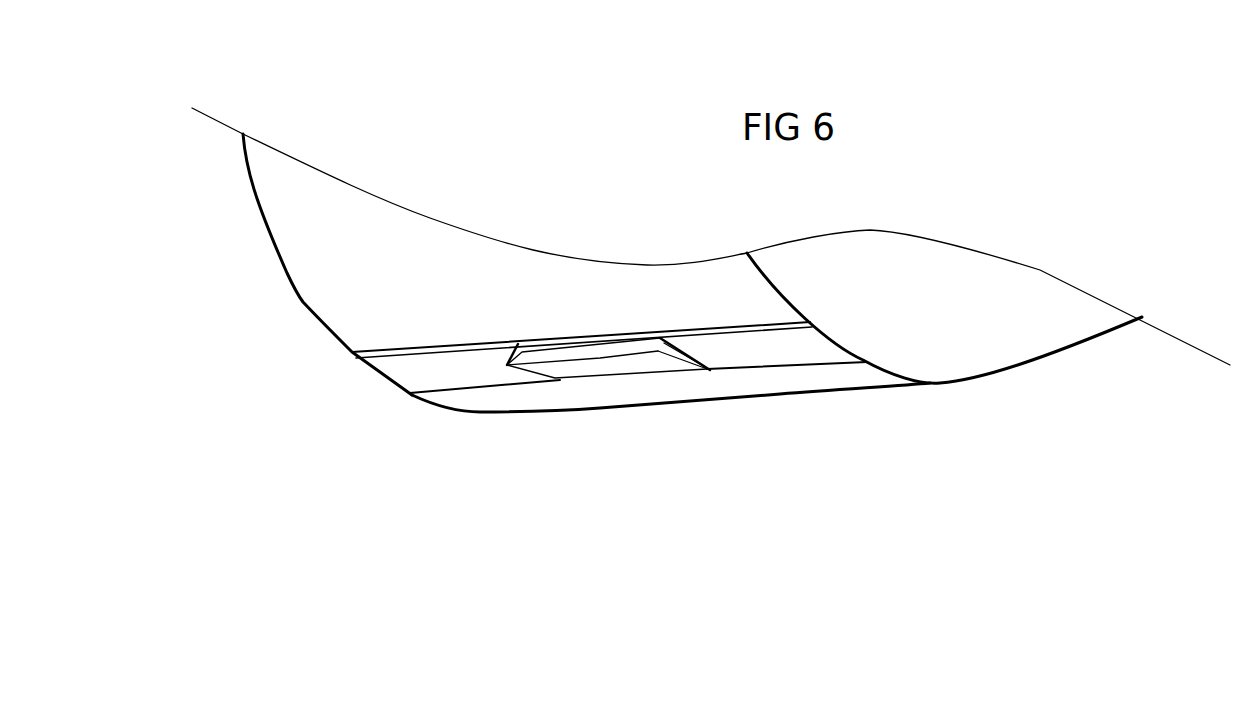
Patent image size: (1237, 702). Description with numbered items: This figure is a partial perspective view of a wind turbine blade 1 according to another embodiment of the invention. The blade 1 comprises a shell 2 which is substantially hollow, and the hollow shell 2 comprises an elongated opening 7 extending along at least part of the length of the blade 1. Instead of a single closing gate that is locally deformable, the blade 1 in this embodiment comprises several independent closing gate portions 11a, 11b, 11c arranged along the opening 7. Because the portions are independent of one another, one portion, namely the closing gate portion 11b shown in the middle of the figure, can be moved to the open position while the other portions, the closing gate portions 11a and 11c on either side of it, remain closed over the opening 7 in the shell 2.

The wind turbine blade 1 is at (1012, 305).
The shell 2 is at (303, 302).
The elongated opening 7 is at (590, 342).
The closing gate portion 11a is at (428, 370).
The closing gate portion 11b is at (597, 367).
The closing gate portion 11c is at (763, 357).